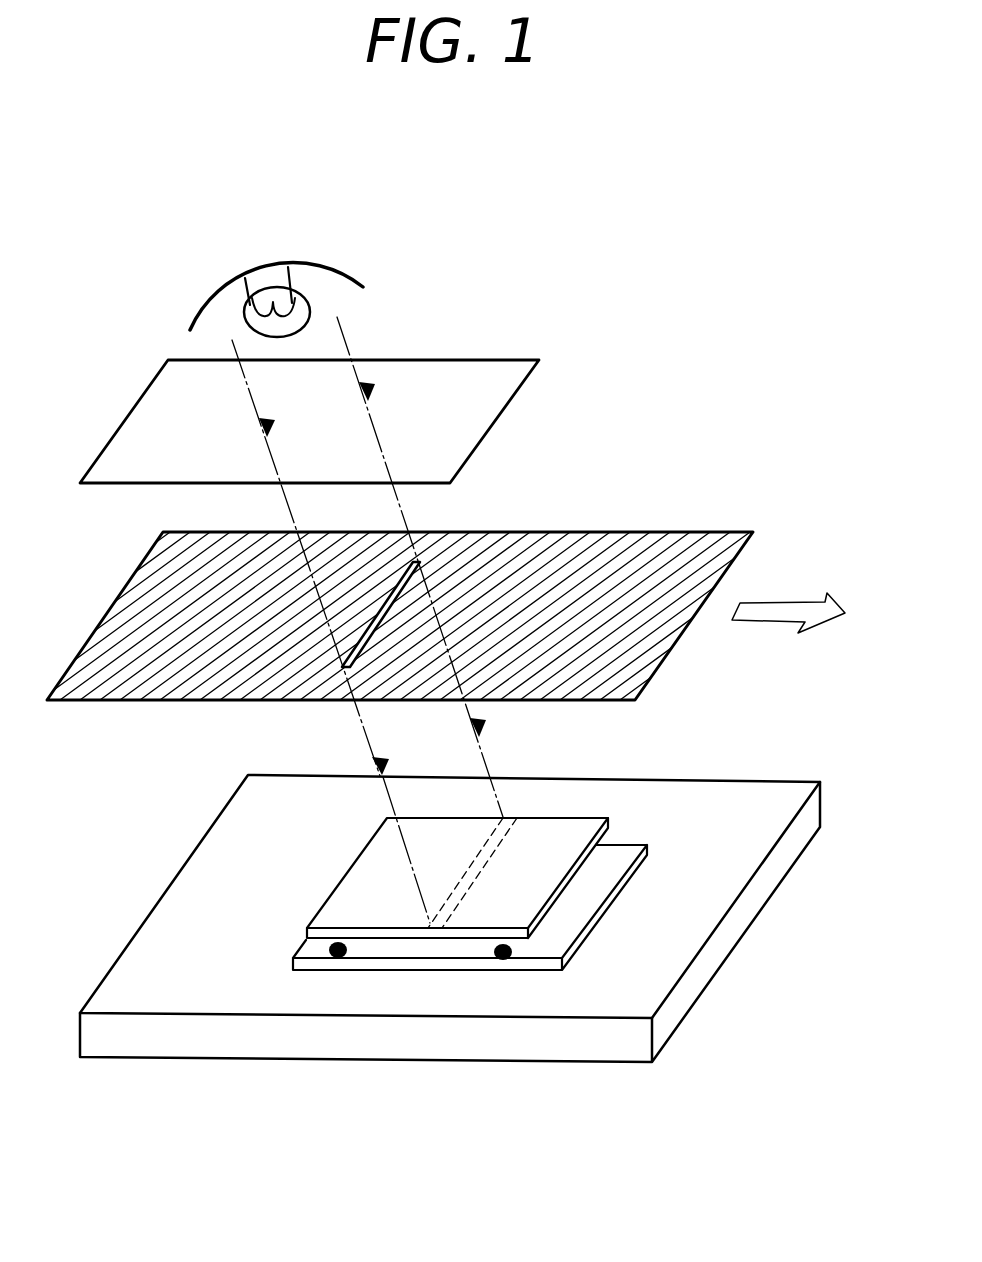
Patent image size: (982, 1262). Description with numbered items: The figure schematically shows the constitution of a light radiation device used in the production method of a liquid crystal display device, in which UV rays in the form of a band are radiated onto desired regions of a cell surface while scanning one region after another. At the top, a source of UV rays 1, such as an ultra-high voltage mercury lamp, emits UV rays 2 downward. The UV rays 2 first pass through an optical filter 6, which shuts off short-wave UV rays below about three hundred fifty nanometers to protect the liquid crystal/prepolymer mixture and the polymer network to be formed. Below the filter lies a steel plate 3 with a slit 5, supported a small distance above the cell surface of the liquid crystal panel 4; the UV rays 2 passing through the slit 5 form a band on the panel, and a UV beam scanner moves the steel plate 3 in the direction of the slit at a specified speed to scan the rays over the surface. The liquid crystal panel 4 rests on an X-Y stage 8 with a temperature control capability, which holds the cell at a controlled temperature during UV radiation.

The source of UV rays 1 is at (343, 300).
The UV rays 2 is at (383, 443).
The steel plate with a slit 3 is at (640, 667).
The liquid crystal panel 4 is at (660, 803).
The slit 5 is at (393, 605).
The optical filter 6 is at (507, 370).
The X-Y stage 8 is at (747, 853).